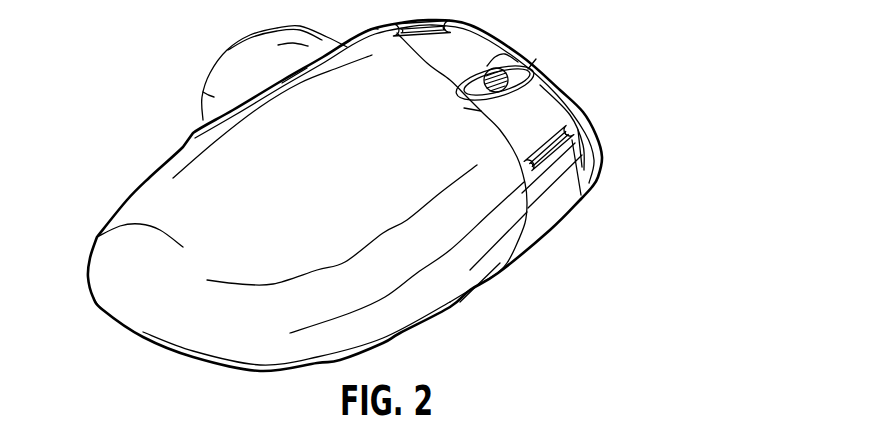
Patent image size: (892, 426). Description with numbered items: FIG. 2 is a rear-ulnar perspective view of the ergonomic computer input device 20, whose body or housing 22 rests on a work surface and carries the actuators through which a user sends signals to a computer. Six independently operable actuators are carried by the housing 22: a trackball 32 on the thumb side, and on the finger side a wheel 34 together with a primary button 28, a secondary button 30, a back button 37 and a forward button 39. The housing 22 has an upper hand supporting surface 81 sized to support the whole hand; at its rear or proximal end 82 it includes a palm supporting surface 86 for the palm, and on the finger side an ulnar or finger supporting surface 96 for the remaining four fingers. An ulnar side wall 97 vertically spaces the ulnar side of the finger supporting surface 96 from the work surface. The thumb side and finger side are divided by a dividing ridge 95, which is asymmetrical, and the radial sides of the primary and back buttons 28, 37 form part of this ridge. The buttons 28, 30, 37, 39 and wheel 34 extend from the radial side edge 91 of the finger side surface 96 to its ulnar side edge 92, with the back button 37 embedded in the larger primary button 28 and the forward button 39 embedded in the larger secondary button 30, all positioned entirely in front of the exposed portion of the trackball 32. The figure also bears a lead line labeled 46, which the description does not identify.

The ergonomic computer input device 20 is at (684, 95).
The housing 22 is at (448, 303).
The primary button 28 is at (467, 33).
The secondary button 30 is at (565, 84).
The trackball 32 is at (230, 67).
The scroll wheel 34 is at (497, 55).
The back button 37 is at (376, 27).
The forward button 39 is at (581, 133).
The palm support 46 is at (276, 24).
The upper hand supporting surface 81 is at (276, 202).
The rear or proximal end 82 is at (104, 313).
The palm supporting surface 86 is at (100, 235).
The radial side edge 91 is at (401, 22).
The ulnar side edge 92 is at (566, 170).
The dividing ridge 95 is at (428, 22).
The finger supporting surface 96 is at (423, 201).
The ulnar side wall 97 is at (521, 240).